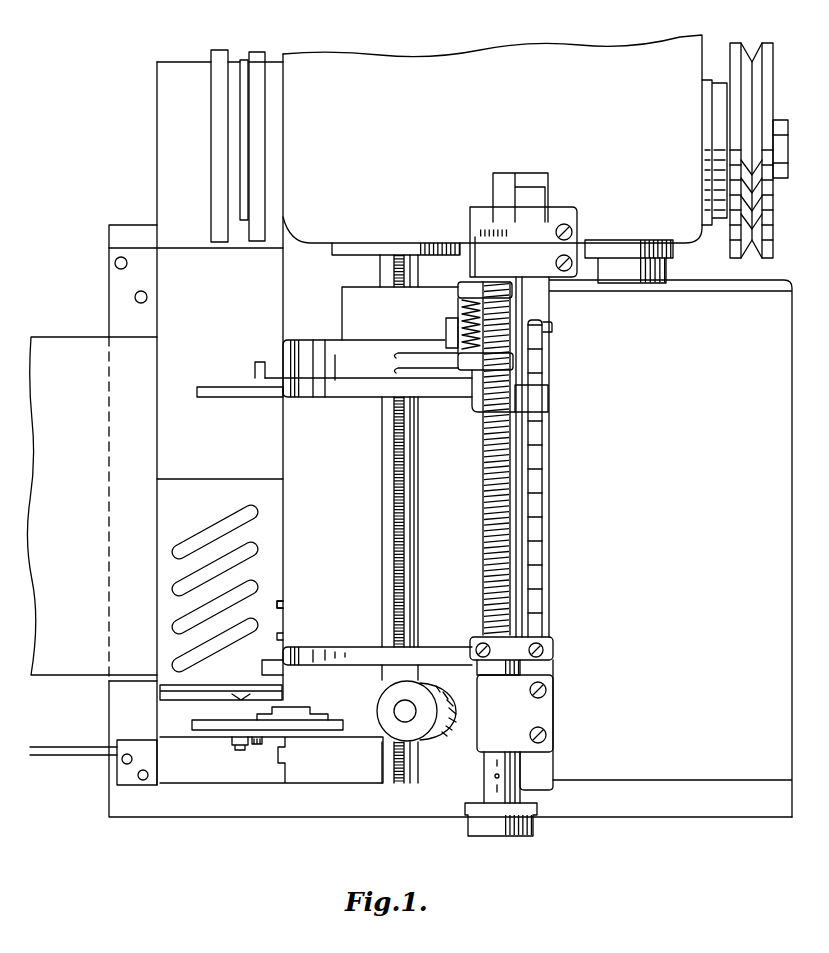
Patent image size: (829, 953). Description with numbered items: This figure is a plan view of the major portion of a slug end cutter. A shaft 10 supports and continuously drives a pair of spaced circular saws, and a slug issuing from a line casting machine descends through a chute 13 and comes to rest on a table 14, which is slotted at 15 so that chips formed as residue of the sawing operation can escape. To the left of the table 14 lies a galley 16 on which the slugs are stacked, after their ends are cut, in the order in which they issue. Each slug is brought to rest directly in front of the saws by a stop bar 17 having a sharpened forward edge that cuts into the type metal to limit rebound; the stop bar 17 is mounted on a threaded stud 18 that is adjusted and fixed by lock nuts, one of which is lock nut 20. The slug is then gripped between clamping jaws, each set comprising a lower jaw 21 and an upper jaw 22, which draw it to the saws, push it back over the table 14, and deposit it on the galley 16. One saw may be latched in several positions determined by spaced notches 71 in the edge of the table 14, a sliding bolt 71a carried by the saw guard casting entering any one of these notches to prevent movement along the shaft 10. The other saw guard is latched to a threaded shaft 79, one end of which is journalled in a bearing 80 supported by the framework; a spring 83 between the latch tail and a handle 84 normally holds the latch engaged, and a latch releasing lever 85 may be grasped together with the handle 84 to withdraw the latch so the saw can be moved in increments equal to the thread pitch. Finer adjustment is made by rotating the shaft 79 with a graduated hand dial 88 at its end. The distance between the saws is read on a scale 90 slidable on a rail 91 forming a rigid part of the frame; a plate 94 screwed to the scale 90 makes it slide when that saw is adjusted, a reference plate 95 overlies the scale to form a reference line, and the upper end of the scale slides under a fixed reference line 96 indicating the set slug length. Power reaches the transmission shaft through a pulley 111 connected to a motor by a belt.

The shaft 10 is at (410, 493).
The chute 13 is at (248, 140).
The table 14 is at (283, 582).
The slots 15 is at (220, 565).
The galley 16 is at (80, 559).
The stop bar 17 is at (175, 701).
The threaded stud 18 is at (236, 751).
The lock nut 20 is at (228, 744).
The lower jaw 21 is at (255, 368).
The upper jaw 22 is at (221, 398).
The notches 71 is at (290, 638).
The sliding bolt 71a is at (308, 706).
The threaded shaft 79 is at (483, 516).
The bearing 80 is at (487, 248).
The spring 83 is at (462, 325).
The handle 84 is at (475, 360).
The latch releasing lever 85 is at (467, 290).
The graduated hand dial 88 is at (490, 828).
The scale 90 is at (550, 486).
The rail 91 is at (550, 516).
The plate 94 is at (545, 658).
The reference plate 95 is at (540, 396).
The fixed reference line 96 is at (550, 328).
The pulley 111 is at (758, 56).